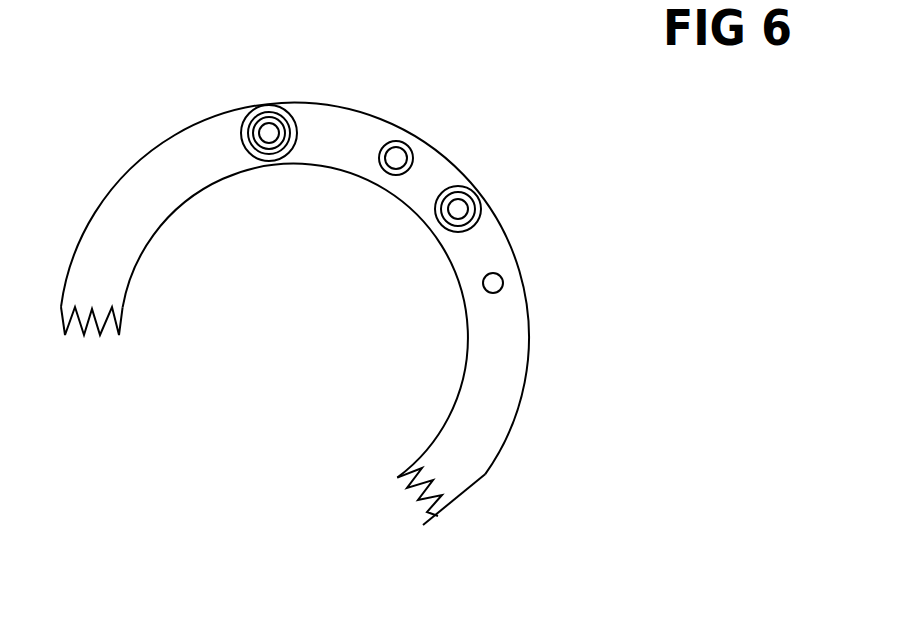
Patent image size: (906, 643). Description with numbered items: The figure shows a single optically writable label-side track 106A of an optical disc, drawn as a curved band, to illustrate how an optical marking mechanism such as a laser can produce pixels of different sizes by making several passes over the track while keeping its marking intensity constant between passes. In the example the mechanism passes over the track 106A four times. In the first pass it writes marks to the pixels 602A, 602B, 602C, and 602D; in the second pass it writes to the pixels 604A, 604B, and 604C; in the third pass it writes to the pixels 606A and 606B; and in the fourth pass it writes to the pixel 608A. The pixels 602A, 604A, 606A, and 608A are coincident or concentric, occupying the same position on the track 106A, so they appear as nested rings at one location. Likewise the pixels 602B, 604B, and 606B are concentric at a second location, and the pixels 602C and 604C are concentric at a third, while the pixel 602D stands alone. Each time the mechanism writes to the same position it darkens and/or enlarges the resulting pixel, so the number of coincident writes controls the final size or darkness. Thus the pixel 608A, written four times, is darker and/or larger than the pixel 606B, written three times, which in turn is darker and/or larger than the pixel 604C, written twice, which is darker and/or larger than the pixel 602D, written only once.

The track 106A is at (477, 458).
The pixel 602A is at (269, 133).
The pixel 602B is at (468, 209).
The pixel 602C is at (402, 150).
The pixel 602D is at (503, 281).
The pixel 604A is at (269, 133).
The pixel 604B is at (467, 192).
The pixel 604C is at (387, 169).
The pixel 606A is at (297, 133).
The pixel 606B is at (435, 215).
The pixel 608A is at (241, 133).